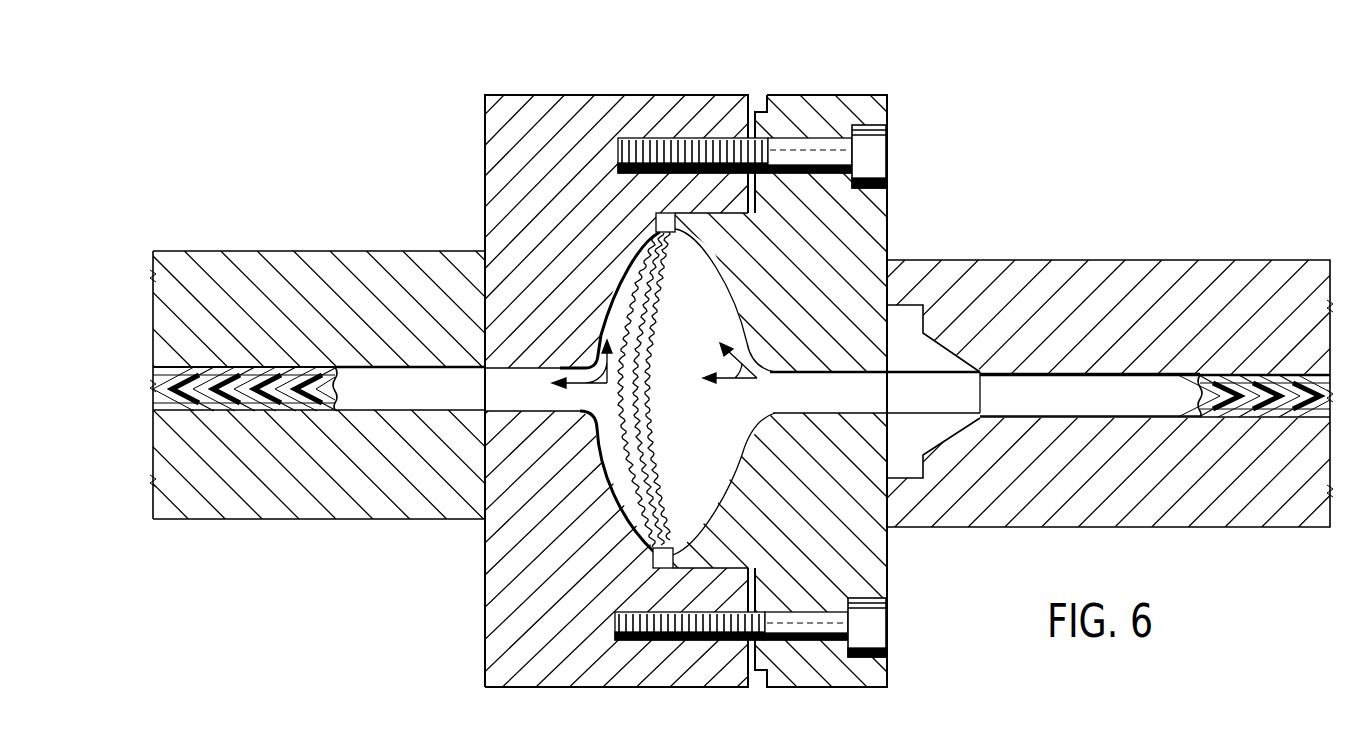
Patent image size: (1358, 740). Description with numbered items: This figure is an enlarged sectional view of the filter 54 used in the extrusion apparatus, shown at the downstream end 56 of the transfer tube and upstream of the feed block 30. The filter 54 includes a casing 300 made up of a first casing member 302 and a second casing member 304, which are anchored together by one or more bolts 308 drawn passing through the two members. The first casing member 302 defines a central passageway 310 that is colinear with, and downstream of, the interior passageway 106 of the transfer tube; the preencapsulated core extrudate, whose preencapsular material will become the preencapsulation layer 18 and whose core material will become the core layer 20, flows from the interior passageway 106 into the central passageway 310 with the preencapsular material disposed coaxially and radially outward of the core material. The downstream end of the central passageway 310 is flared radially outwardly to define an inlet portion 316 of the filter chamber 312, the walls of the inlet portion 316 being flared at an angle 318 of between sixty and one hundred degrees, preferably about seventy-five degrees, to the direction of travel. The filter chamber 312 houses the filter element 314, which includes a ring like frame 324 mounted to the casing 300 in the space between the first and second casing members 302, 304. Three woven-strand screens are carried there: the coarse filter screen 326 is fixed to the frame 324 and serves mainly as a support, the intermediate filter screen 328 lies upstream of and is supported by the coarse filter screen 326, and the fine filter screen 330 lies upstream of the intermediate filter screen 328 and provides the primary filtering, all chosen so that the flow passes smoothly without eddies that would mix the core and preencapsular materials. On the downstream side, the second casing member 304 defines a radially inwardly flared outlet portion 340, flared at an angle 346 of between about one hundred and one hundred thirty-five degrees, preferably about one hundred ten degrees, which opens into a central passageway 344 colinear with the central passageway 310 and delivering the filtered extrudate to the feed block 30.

The preencapsulation layer 18 is at (338, 373).
The core layer 20 is at (343, 392).
The feed block 30 is at (388, 251).
The filter 54 is at (843, 86).
The downstream end 56 is at (1080, 260).
The interior passageway 106 is at (1058, 402).
The casing 300 is at (721, 86).
The first casing member 302 is at (890, 95).
The second casing member 304 is at (528, 95).
The bolts 308 is at (878, 162).
The central passageway 310 is at (886, 401).
The filter chamber 312 is at (743, 319).
The filter element 314 is at (603, 490).
The inlet portion 316 is at (727, 278).
The angle 318 is at (727, 368).
The ring like frame 324 is at (656, 218).
The coarse filter screen 326 is at (614, 397).
The intermediate filter screen 328 is at (646, 440).
The fine filter screen 330 is at (650, 393).
The outlet portion 340 is at (604, 296).
The central passageway 344 is at (525, 398).
The angle 346 is at (596, 363).